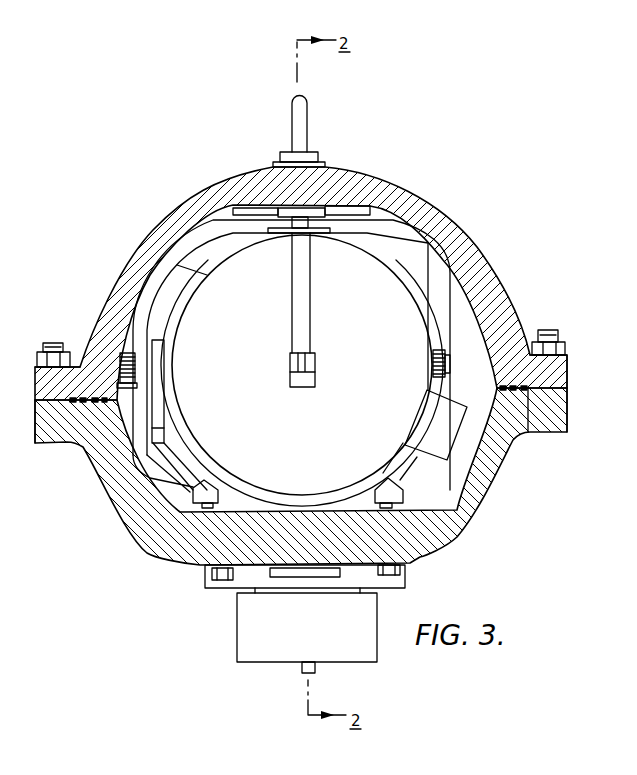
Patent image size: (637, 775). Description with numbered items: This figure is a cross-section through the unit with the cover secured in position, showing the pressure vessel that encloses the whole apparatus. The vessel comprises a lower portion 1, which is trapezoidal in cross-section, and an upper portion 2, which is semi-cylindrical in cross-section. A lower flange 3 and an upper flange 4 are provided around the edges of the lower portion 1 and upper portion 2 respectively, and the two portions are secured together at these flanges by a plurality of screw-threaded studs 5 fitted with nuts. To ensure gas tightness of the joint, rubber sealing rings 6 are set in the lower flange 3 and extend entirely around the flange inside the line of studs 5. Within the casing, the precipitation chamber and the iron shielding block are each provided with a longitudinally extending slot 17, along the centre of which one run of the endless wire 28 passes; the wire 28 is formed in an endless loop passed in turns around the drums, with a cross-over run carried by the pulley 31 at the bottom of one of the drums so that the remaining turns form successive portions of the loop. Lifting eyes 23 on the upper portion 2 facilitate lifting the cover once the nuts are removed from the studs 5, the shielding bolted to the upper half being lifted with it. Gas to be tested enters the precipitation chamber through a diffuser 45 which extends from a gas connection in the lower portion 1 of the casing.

The lower portion 1 is at (133, 513).
The upper portion 2 is at (440, 212).
The lower flange 3 is at (567, 418).
The upper flange 4 is at (567, 362).
The screw-threaded stud 5 is at (548, 330).
The rubber sealing ring 6 is at (521, 431).
The longitudinally extending slot 17 is at (302, 295).
The lifting eye 23 is at (302, 122).
The wire 28 is at (333, 365).
The pulley 31 is at (132, 348).
The diffuser 45 is at (176, 268).